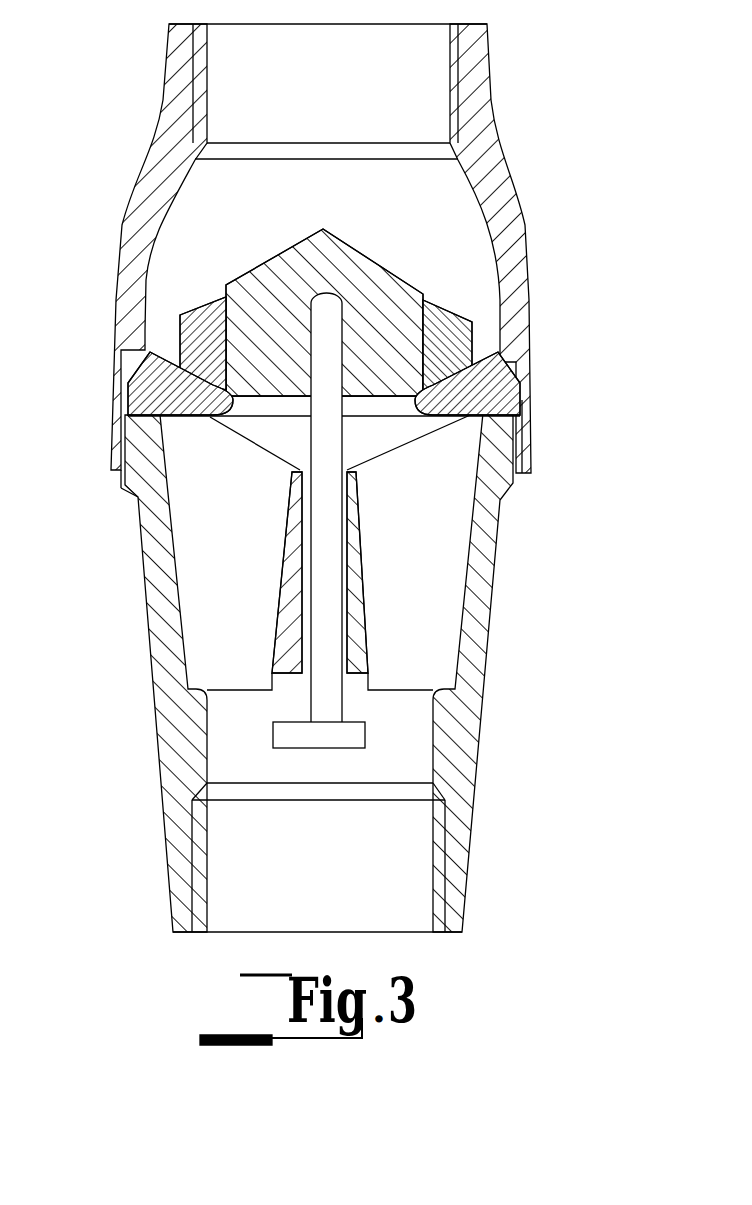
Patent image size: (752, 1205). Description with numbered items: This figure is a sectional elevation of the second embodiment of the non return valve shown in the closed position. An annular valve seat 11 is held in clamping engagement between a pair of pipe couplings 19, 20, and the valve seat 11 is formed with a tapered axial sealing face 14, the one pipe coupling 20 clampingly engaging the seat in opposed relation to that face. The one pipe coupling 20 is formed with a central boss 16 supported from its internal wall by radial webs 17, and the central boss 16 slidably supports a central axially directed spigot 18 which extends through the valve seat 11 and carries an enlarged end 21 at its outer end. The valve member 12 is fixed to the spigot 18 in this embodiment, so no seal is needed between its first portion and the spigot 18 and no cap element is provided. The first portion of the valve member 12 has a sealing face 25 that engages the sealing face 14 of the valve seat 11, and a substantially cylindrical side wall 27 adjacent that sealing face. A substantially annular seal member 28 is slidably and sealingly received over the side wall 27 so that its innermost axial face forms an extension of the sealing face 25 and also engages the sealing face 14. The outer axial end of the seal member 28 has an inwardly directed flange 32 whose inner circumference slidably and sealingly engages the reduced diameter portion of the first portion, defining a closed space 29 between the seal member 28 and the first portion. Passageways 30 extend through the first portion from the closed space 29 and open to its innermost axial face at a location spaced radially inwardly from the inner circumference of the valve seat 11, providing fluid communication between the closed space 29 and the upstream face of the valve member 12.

The valve seat 11 is at (512, 404).
The valve member 12 is at (458, 233).
The sealing face 14 is at (480, 353).
The central boss 16 is at (365, 585).
The radial webs 17 is at (453, 533).
The spigot 18 is at (330, 445).
The pipe coupling 19 is at (502, 182).
The pipe coupling 20 is at (475, 693).
The enlarged end 21 is at (347, 742).
The sealing face 25 is at (295, 468).
The side wall 27 is at (200, 385).
The seal member 28 is at (497, 333).
The closed space 29 is at (485, 383).
The passageways 30 is at (160, 380).
The flange 32 is at (460, 297).